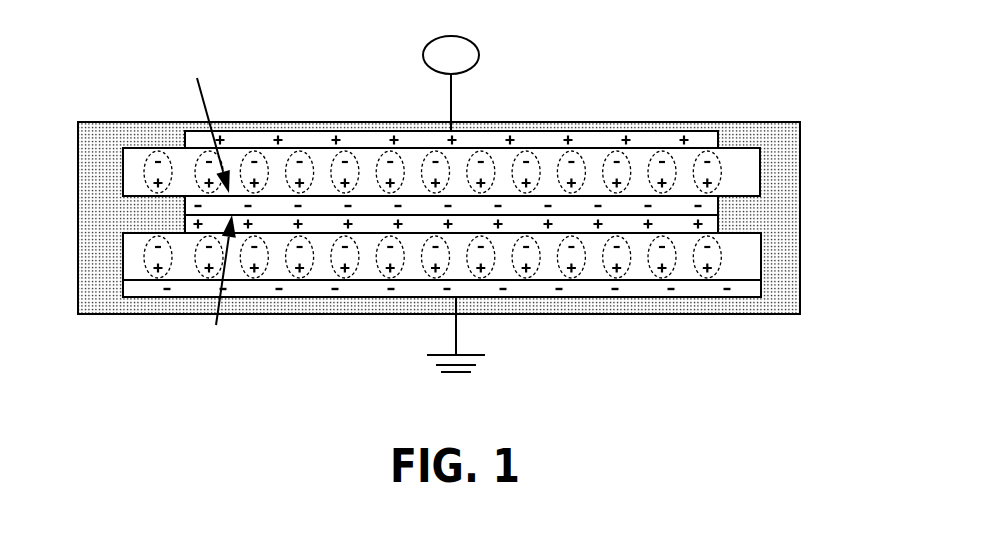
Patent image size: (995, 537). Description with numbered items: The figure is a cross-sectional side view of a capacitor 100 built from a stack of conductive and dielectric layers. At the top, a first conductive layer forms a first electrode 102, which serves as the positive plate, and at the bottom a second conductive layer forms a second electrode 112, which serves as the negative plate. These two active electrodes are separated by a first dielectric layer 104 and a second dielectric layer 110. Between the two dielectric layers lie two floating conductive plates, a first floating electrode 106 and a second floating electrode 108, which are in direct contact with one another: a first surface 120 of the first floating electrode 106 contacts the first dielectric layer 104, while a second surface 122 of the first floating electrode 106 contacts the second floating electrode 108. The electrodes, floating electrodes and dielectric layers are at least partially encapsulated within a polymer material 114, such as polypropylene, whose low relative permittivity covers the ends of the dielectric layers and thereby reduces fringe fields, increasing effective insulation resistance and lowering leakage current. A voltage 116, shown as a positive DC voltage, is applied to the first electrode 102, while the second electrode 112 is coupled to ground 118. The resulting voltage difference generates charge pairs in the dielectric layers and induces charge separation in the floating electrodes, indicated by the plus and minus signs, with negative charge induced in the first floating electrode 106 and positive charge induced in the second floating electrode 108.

The capacitor 100 is at (441, 198).
The first electrode 102 is at (532, 137).
The first dielectric layer 104 is at (751, 165).
The first floating electrode 106 is at (185, 207).
The second floating electrode 108 is at (185, 224).
The second dielectric layer 110 is at (746, 270).
The second electrode 112 is at (538, 297).
The polymer material 114 is at (105, 130).
The voltage 116 is at (478, 54).
The ground 118 is at (427, 355).
The first surface 120 is at (197, 78).
The second surface 122 is at (216, 325).